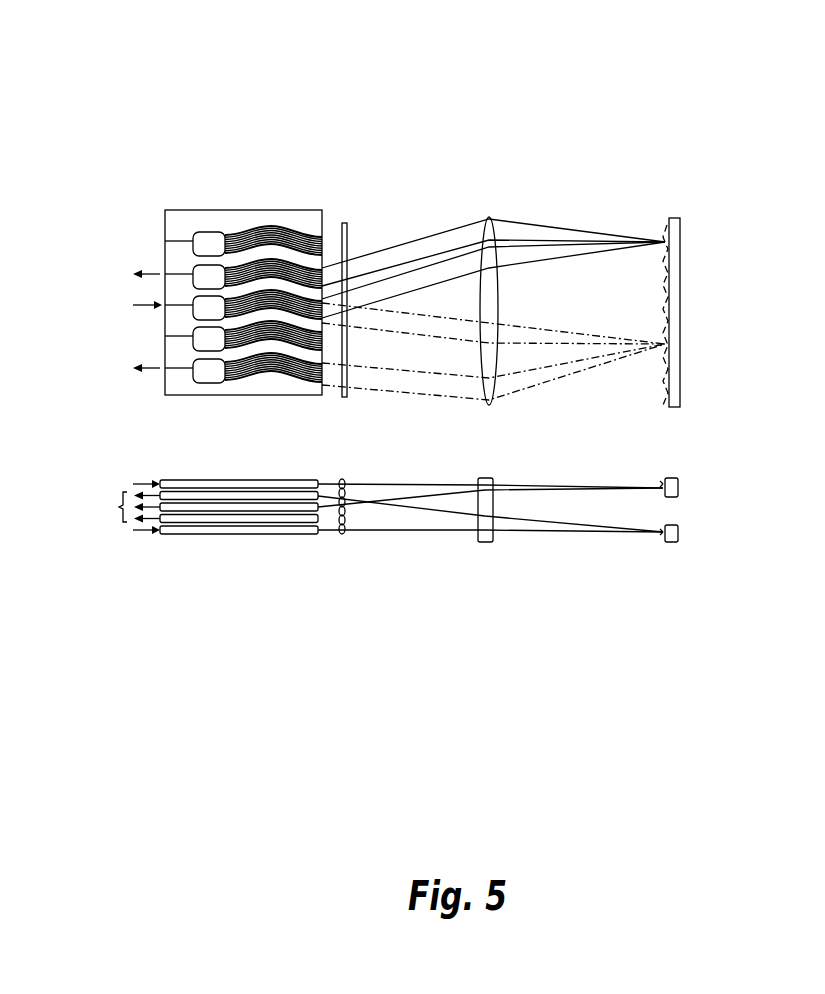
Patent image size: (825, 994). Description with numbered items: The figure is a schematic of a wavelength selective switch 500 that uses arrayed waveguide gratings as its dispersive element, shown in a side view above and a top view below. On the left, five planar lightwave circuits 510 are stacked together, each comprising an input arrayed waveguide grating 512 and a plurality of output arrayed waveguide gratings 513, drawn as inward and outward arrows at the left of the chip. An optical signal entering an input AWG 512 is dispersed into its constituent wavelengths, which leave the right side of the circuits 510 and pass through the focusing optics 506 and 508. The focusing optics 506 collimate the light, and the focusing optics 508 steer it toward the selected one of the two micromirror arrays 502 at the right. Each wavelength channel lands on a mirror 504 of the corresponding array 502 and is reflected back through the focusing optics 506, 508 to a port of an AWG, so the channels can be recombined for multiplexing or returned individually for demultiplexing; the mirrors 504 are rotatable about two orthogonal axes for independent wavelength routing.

The wavelength selective switch 500 is at (585, 67).
The multidimensional micromirror array 502 is at (680, 238).
The mirror 504 is at (666, 232).
The focusing optics 506 is at (347, 223).
The focusing optics 508 is at (489, 217).
The planar lightwave circuit 510 is at (231, 210).
The input arrayed waveguide grating 512 is at (137, 310).
The output arrayed waveguide grating 513 is at (140, 374).